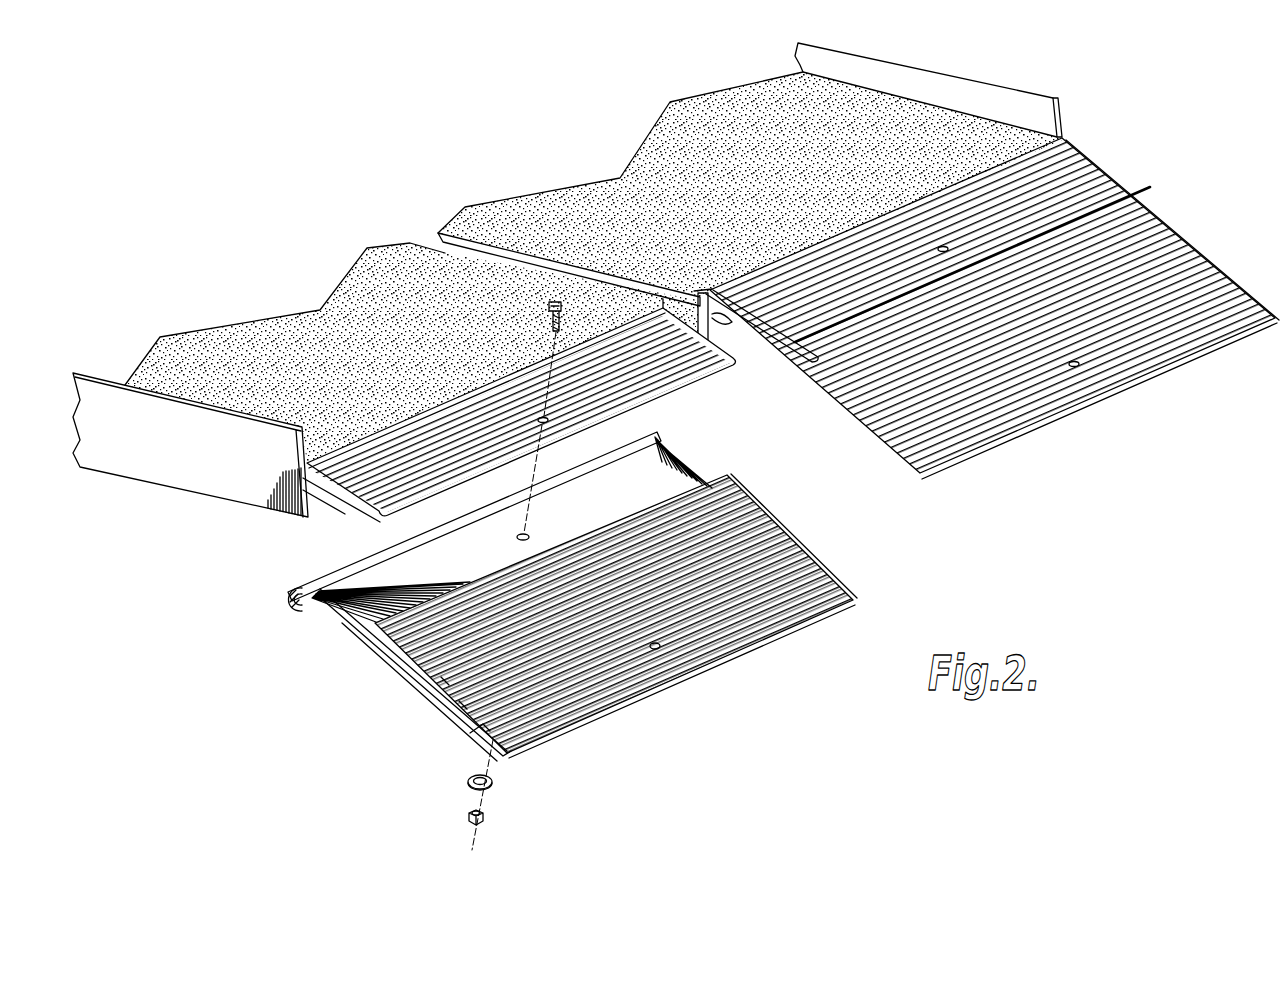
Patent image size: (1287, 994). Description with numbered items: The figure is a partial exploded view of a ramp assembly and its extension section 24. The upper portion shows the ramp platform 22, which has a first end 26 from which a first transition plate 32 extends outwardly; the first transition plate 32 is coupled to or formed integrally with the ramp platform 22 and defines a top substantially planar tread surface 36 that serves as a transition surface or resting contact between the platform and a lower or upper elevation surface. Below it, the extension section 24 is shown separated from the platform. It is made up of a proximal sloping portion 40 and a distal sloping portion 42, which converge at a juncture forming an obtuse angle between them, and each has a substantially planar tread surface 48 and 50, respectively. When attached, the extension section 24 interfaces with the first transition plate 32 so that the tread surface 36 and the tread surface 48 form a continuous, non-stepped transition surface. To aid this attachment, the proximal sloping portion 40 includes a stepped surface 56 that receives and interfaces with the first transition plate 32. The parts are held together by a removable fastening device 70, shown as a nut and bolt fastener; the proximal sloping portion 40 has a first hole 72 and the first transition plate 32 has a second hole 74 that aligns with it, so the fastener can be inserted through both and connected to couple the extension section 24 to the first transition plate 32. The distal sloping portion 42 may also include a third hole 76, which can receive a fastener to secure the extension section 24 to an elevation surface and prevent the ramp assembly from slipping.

The ramp platform 22 is at (262, 393).
The extension section 24 is at (249, 668).
The first end 26 is at (294, 472).
The first transition plate 32 is at (363, 503).
The tread surface 36 is at (423, 450).
The proximal sloping portion 40 is at (378, 630).
The distal sloping portion 42 is at (483, 718).
The tread surface 48 is at (750, 498).
The tread surface 50 is at (820, 562).
The stepped surface 56 is at (317, 600).
The fastening device 70 is at (556, 302).
The first hole 72 is at (395, 654).
The second hole 74 is at (548, 421).
The third hole 76 is at (662, 645).